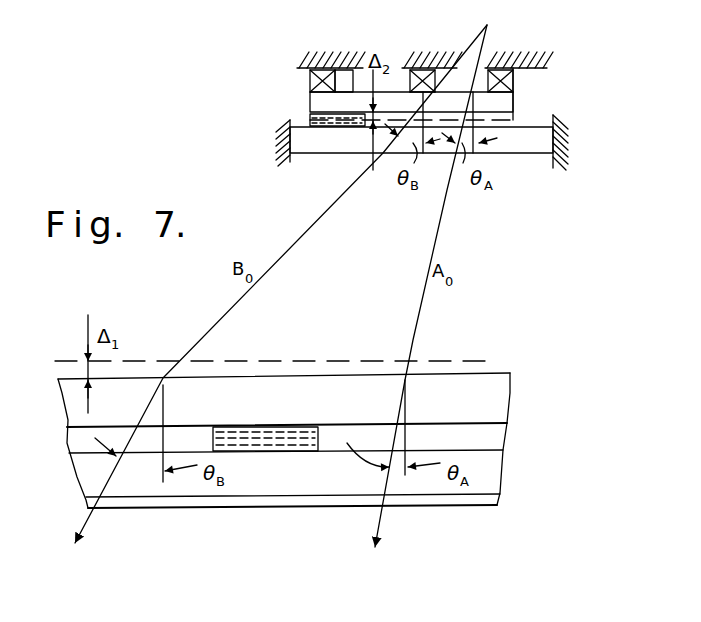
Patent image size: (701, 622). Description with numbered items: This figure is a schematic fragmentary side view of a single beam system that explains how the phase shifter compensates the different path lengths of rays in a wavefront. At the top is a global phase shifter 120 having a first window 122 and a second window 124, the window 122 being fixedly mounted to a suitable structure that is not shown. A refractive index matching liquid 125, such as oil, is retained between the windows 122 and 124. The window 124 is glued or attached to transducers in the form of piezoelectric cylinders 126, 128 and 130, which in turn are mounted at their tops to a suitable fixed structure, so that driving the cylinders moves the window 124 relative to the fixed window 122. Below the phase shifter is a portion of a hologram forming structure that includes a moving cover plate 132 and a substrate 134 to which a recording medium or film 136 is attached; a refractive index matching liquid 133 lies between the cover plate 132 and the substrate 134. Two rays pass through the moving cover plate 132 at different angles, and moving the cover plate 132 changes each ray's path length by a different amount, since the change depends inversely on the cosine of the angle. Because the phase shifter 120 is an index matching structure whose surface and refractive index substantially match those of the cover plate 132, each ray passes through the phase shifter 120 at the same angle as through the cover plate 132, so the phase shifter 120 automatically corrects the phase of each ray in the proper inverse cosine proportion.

The global phase shifter 120 is at (260, 112).
The window 122 is at (337, 157).
The window 124 is at (354, 64).
The refractive index matching liquid 125 is at (507, 120).
The piezoelectric cylinder 126 is at (308, 88).
The piezoelectric cylinder 128 is at (436, 74).
The piezoelectric cylinder 130 is at (516, 76).
The moving cover plate 132 is at (511, 392).
The refractive index matching liquid 133 is at (245, 437).
The substrate 134 is at (505, 460).
The recording medium 136 is at (497, 505).